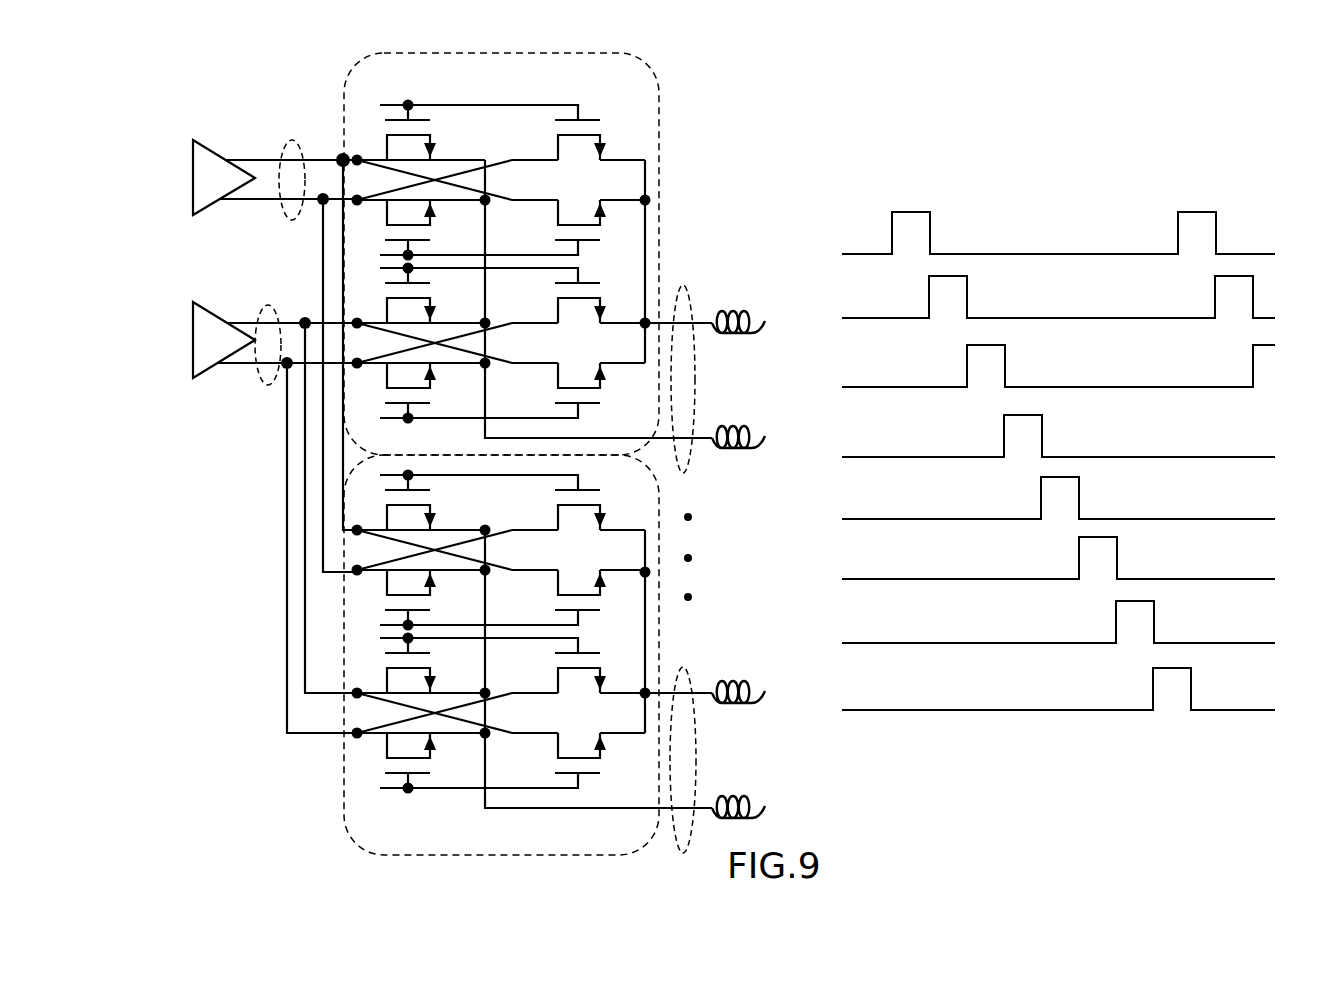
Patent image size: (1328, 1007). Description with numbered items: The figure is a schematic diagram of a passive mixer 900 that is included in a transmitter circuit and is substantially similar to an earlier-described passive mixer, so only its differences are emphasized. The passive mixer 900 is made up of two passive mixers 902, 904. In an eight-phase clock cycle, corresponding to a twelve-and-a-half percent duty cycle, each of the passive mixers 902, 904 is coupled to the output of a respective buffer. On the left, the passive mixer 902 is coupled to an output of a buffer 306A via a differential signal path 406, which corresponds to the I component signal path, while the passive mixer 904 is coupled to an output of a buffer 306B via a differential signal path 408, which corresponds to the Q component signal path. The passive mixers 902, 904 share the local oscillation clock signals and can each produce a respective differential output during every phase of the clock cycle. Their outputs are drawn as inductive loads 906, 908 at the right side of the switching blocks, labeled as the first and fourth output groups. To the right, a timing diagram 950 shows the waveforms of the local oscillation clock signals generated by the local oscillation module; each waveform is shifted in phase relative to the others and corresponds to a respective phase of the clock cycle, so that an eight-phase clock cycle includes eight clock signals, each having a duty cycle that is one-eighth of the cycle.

The buffer 306A is at (193, 196).
The buffer 306B is at (224, 318).
The differential signal path 406 is at (299, 150).
The differential signal path 408 is at (278, 310).
The passive mixer 900 is at (733, 82).
The passive mixer 902 is at (660, 167).
The passive mixer 904 is at (660, 547).
The first output load inductors 906 is at (690, 306).
The fourth output load inductors 908 is at (689, 690).
The timing diagram 950 is at (1222, 152).